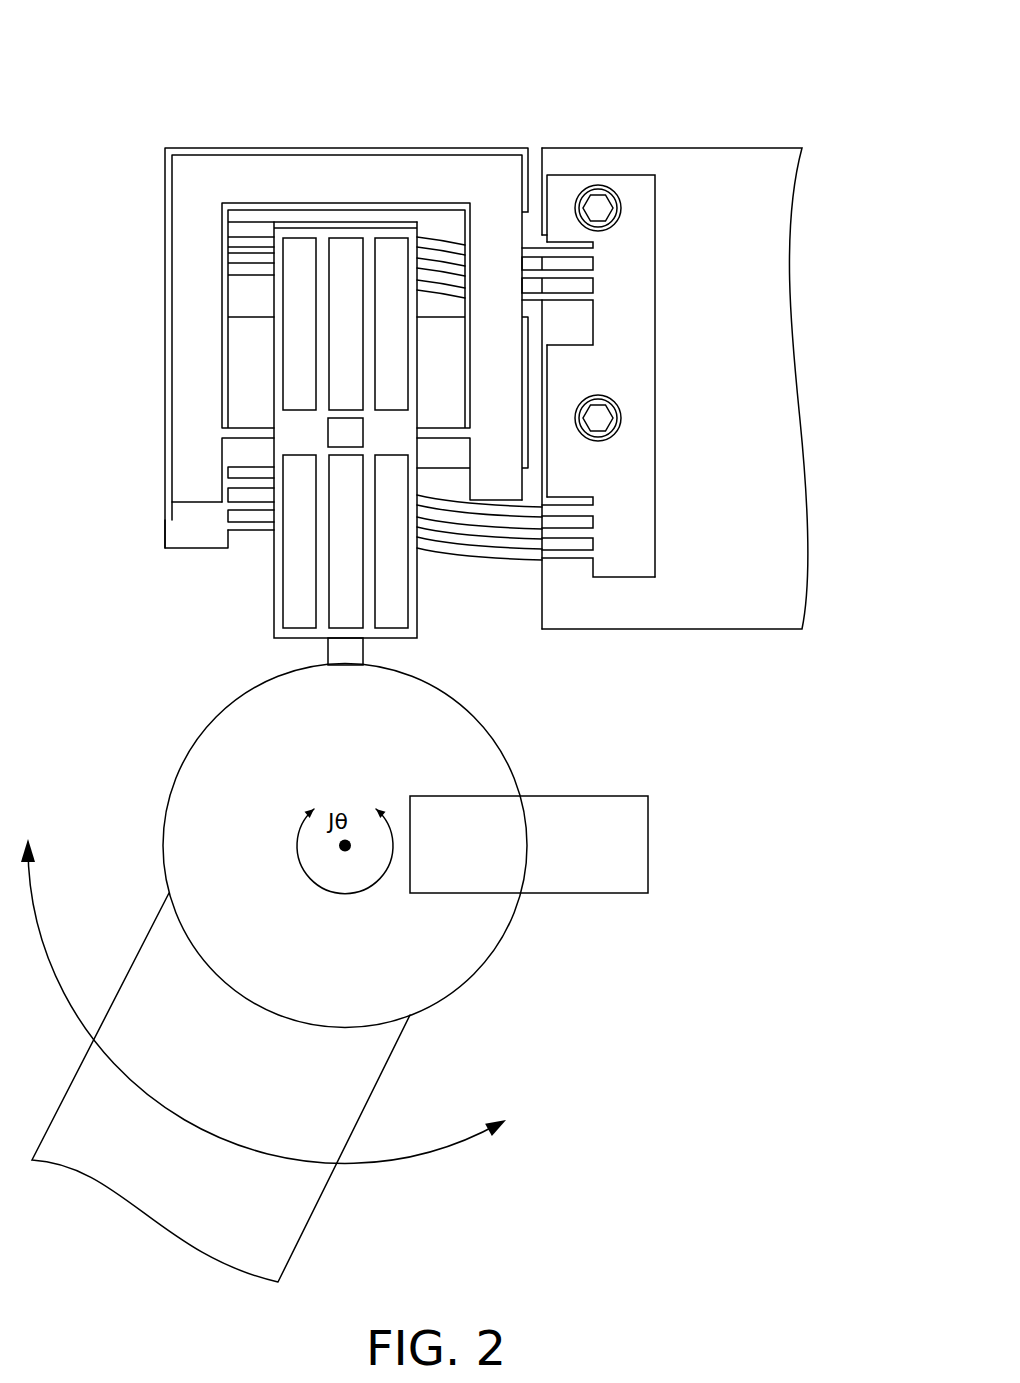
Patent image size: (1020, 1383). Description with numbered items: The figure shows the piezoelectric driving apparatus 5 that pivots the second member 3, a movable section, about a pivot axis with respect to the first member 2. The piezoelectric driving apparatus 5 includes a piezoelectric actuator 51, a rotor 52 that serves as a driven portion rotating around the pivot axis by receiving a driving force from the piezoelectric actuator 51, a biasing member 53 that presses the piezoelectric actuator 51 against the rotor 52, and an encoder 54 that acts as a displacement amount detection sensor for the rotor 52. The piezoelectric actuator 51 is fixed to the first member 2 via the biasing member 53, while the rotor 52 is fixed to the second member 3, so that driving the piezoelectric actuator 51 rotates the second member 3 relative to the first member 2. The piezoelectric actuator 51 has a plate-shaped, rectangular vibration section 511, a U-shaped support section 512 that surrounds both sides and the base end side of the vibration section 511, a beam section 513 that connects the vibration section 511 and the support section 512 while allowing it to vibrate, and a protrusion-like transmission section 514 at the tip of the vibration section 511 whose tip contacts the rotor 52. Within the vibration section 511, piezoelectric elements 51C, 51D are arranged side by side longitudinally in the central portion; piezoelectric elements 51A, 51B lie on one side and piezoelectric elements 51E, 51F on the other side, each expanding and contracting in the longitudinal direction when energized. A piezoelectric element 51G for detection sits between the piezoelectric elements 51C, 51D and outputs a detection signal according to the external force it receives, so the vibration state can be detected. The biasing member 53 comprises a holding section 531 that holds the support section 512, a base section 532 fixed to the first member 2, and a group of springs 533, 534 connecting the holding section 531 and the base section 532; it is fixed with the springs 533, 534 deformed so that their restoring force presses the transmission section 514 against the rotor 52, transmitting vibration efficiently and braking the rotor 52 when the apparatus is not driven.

The piezoelectric driving apparatus 5 is at (105, 58).
The piezoelectric actuator 51 is at (375, 147).
The vibration section 511 is at (273, 367).
The support section 512 is at (285, 178).
The beam section 513 is at (248, 432).
The transmission section 514 is at (345, 650).
The piezoelectric element 51A is at (393, 592).
The piezoelectric element 51B is at (393, 333).
The piezoelectric element 51C is at (345, 613).
The piezoelectric element 51D is at (343, 262).
The piezoelectric element 51E is at (297, 572).
The piezoelectric element 51F is at (297, 301).
The piezoelectric element for detection 51G is at (345, 435).
The rotor 52 is at (200, 731).
The biasing member 53 is at (660, 418).
The holding section 531 is at (198, 520).
The base section 532 is at (625, 263).
The spring 533 is at (453, 243).
The spring 534 is at (560, 560).
The encoder 54 is at (652, 830).
The first member 2 is at (749, 205).
The second member 3 is at (278, 1188).